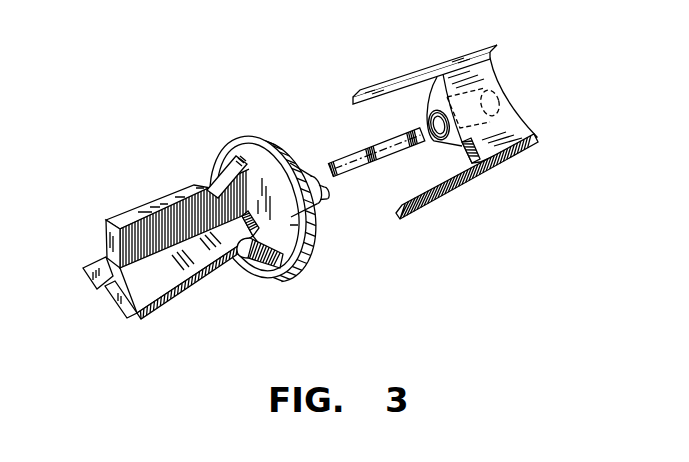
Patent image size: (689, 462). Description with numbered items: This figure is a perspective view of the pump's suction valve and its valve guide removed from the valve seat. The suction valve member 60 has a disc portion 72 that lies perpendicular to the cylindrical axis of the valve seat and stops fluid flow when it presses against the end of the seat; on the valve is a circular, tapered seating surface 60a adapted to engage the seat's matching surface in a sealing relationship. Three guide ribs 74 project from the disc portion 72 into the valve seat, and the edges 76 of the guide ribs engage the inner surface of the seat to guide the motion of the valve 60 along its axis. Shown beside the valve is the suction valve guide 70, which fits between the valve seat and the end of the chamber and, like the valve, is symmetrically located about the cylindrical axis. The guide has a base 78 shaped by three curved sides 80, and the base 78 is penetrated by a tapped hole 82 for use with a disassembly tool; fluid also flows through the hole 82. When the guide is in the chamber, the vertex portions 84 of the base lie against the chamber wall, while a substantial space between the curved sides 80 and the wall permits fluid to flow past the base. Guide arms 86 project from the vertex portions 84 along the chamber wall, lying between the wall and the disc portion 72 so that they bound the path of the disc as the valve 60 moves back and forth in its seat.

The suction valve member 60 is at (147, 244).
The tapered seating surface 60a is at (273, 272).
The suction valve guide 70 is at (465, 136).
The disc portion 72 is at (297, 262).
The guide ribs 74 is at (103, 238).
The edges of the guide ribs 76 is at (146, 208).
The base 78 is at (530, 123).
The curved sides 80 is at (484, 82).
The tapped hole 82 is at (425, 141).
The vertex portions 84 is at (387, 91).
The guide arms 86 is at (357, 156).